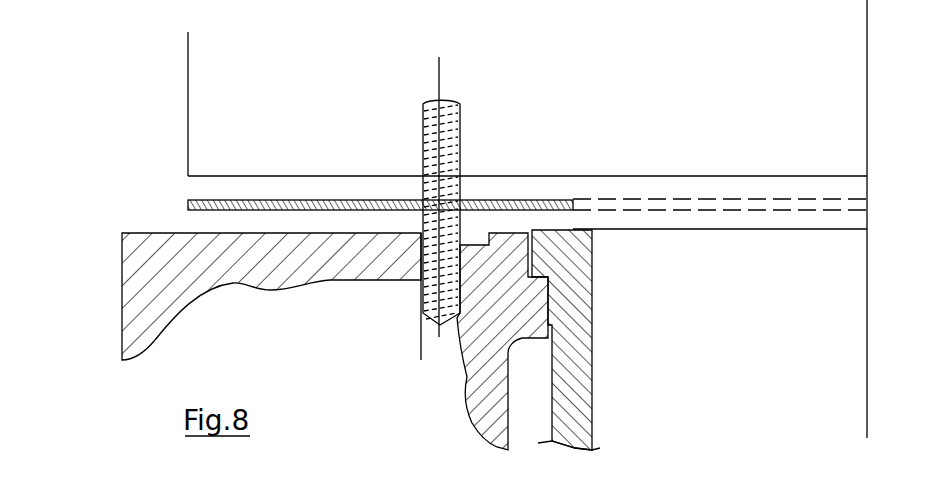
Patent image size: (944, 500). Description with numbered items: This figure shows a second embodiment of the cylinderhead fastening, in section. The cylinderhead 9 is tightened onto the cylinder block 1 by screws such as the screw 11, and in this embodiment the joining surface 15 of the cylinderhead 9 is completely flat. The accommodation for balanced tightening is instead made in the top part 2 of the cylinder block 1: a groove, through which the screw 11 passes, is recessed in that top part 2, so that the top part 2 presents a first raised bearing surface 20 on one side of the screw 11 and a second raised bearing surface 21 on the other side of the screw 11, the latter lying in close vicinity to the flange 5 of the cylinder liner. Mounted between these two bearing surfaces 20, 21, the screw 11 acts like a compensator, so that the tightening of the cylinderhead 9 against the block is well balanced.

The cylinder block 1 is at (133, 317).
The top part of the cylinder block 2 is at (475, 216).
The flange of the liner 5 is at (558, 258).
The cylinderhead 9 is at (240, 131).
The screw 11 is at (489, 179).
The joining surface of the cylinderhead 15 is at (496, 182).
The first raised bearing surface 20 is at (421, 360).
The second raised bearing surface 21 is at (497, 243).